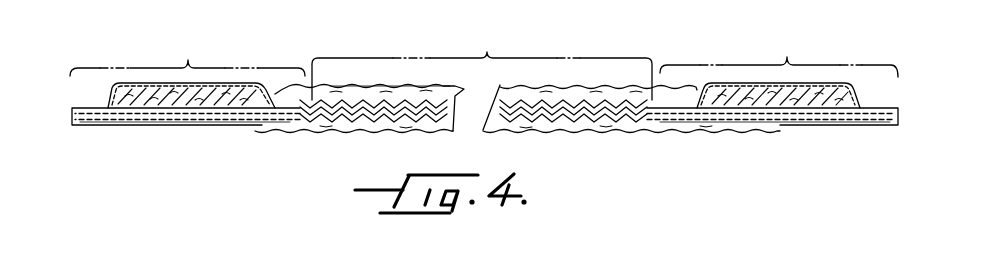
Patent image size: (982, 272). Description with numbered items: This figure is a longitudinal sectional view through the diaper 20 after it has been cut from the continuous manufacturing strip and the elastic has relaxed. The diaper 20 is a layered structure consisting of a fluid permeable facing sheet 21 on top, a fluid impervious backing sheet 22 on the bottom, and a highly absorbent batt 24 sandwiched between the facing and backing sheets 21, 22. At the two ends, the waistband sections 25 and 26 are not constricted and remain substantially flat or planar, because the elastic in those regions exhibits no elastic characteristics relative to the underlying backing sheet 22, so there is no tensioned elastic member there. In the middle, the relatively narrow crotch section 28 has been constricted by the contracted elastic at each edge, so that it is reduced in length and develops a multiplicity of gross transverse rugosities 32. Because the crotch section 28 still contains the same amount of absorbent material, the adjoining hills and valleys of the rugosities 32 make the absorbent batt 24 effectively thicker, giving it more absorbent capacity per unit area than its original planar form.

The diaper 20 is at (636, 144).
The fluid permeable facing sheet 21 is at (148, 87).
The fluid impervious backing sheet 22 is at (164, 125).
The absorbent batt 24 is at (217, 125).
The waistband section 25 is at (187, 67).
The waistband section 26 is at (779, 66).
The crotch section 28 is at (493, 74).
The transverse rugosities 32 is at (390, 92).